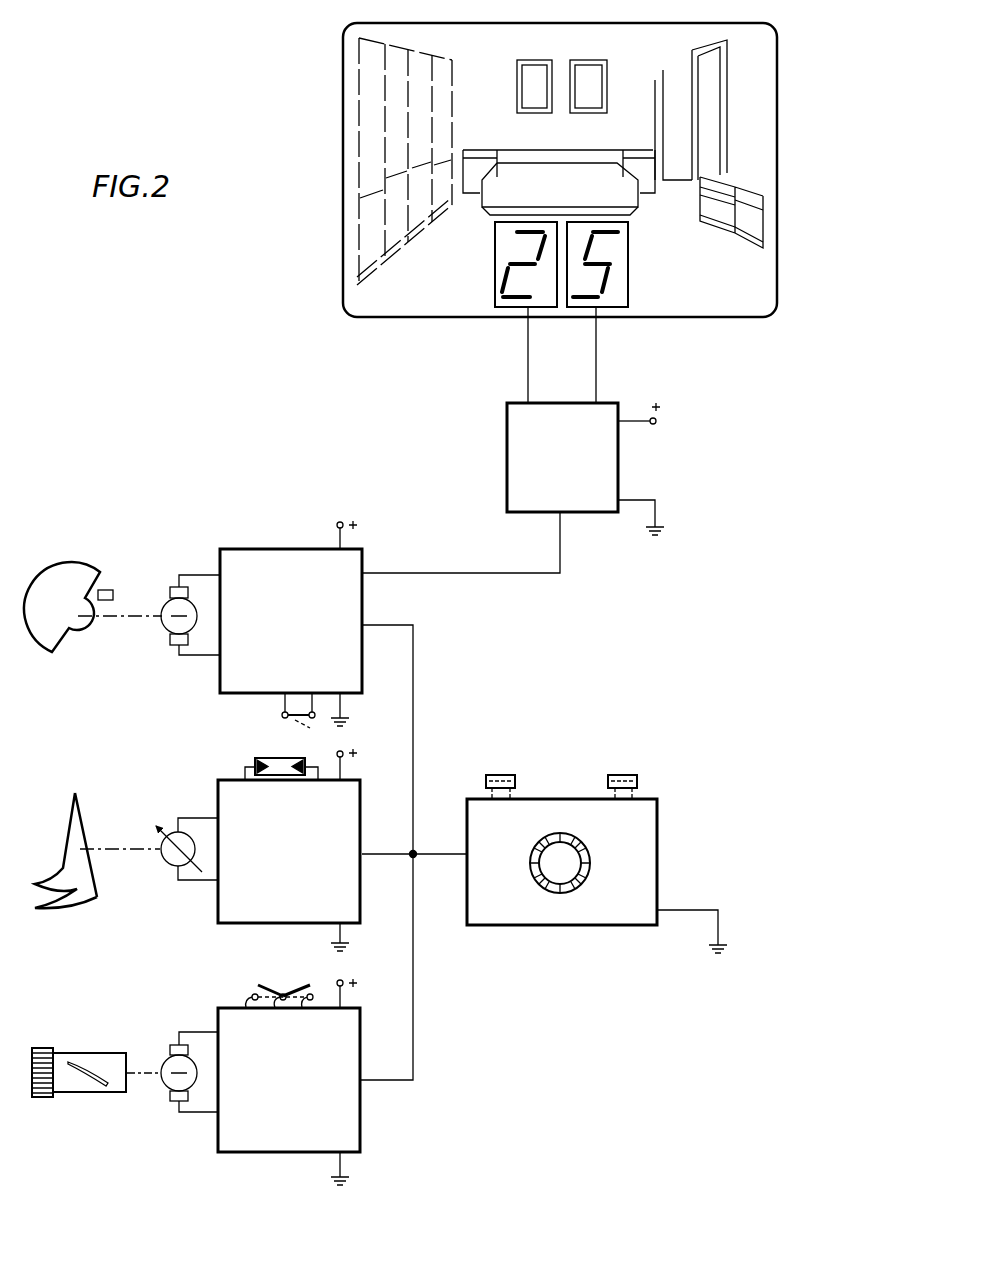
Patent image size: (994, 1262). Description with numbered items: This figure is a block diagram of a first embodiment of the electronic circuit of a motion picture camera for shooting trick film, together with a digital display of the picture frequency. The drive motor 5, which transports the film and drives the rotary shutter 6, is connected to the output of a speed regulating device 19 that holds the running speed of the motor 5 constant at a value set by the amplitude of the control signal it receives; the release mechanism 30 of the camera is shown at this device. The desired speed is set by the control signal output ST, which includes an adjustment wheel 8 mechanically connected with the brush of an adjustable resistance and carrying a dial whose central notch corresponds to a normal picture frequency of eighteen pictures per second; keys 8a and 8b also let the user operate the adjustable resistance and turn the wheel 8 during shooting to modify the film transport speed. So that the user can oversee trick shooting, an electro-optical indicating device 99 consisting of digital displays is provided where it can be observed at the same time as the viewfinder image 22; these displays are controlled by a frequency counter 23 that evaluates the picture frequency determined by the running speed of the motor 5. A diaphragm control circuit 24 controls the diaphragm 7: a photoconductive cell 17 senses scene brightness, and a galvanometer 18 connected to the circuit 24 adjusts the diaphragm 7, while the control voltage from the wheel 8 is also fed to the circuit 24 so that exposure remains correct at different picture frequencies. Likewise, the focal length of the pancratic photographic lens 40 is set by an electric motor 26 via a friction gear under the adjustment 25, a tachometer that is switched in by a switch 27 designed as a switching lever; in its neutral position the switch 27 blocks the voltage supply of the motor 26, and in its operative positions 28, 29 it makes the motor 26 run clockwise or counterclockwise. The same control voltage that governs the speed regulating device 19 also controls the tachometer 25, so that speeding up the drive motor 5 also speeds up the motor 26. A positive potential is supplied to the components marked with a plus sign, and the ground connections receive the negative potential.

The viewfinder image 22 is at (527, 190).
The electro-optical indicating device 99 is at (613, 296).
The frequency counter 23 is at (568, 475).
The speed regulating device 19 is at (299, 640).
The diaphragm control circuit 24 is at (295, 870).
The adjustment (tachometer) for lens 25 is at (297, 1098).
The release mechanism 30 is at (308, 709).
The drive motor 5 is at (167, 624).
The rotary shutter 6 is at (58, 580).
The diaphragm 7 is at (63, 872).
The photoconductive cell 17 is at (278, 771).
The galvanometer 18 is at (167, 860).
The electric motor 26 is at (167, 1079).
The switch 27 is at (284, 1016).
The operative position 28 is at (250, 1018).
The operative position 29 is at (318, 1018).
The pancratic photographic lens 40 is at (88, 1058).
The control signal output ST is at (597, 848).
The adjustment wheel 8 is at (570, 868).
The key 8a is at (503, 775).
The key 8b is at (627, 775).